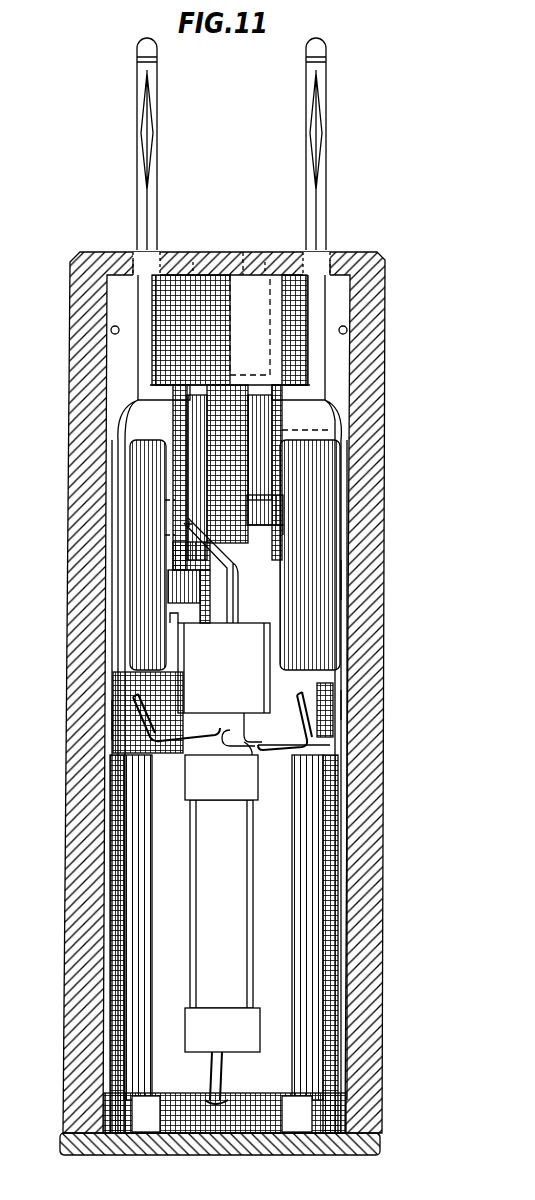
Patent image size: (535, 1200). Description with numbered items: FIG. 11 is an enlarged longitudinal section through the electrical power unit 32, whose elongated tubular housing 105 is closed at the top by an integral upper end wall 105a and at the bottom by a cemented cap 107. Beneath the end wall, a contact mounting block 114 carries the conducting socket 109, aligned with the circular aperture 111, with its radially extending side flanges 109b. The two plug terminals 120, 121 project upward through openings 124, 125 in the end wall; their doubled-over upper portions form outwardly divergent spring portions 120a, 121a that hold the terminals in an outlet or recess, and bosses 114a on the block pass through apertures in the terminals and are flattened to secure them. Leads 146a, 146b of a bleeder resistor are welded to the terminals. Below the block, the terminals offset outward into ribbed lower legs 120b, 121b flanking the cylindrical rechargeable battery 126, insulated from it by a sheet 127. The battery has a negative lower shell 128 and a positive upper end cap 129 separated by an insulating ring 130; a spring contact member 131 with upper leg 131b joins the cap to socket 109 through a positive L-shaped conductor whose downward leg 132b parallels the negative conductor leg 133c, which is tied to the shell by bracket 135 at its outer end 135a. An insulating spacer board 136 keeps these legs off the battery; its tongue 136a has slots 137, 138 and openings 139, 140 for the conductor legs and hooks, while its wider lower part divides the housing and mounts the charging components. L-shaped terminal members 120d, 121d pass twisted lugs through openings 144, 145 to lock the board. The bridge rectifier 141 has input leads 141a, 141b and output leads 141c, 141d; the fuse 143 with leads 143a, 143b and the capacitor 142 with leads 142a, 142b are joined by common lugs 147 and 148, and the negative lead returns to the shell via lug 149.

The electrical power unit 32 is at (410, 172).
The tubular housing 105 is at (85, 769).
The upper end wall 105a is at (176, 252).
The lower end plug member or cap 107 is at (162, 1158).
The electrical socket 109 is at (266, 258).
The side flanges 109b is at (194, 258).
The circular aperture 111 is at (243, 252).
The contact mounting block 114 is at (152, 303).
The circular projections or bosses 114a is at (108, 281).
The plug terminal 120 is at (137, 76).
The intermediate spring portion 120a is at (130, 139).
The lower end leg 120b is at (140, 650).
The L-shaped terminal member 120d is at (118, 724).
The plug terminal 121 is at (327, 79).
The intermediate spring portion 121a is at (338, 138).
The lower end leg 121b is at (332, 580).
The L-shaped terminal member 121d is at (342, 700).
The opening 124 is at (133, 252).
The opening 125 is at (328, 250).
The rechargeable battery 126 is at (130, 508).
The insulating sheet 127 is at (300, 608).
The lower cylindrical shell or casing 128 is at (150, 533).
The upper end cap 129 is at (140, 458).
The annular insulating ring 130 is at (140, 480).
The spring contact member 131 is at (335, 438).
The upper leg 131b is at (140, 401).
The downwardly extending leg 132b is at (130, 438).
The downwardly extending leg 133c is at (290, 423).
The bracket 135 is at (310, 470).
The outer end of bracket 135a is at (283, 510).
The insulating spacer board 136 is at (285, 638).
The upper portion or tongue 136a is at (300, 455).
The opening or slot 137 is at (150, 376).
The opening or slot 138 is at (300, 376).
The opening 139 is at (175, 543).
The opening 140 is at (290, 550).
The bridge-type rectifier 141 is at (224, 668).
The terminal lead 141a is at (252, 733).
The terminal lead 141b is at (190, 746).
The positive output lead 141c is at (240, 573).
The negative output lead 141d is at (176, 610).
The capacitor 142 is at (300, 852).
The upper end lead 142a is at (196, 758).
The lower end lead 142b is at (224, 1096).
The fuse 143 is at (244, 930).
The upper end lead 143a is at (320, 735).
The lower end lead 143b is at (210, 1076).
The opening 144 is at (150, 690).
The opening 145 is at (305, 698).
The end lead 146a is at (112, 329).
The end lead 146b is at (347, 327).
The common lug 147 is at (225, 1120).
The common lug 148 is at (250, 756).
The lug 149 is at (168, 584).